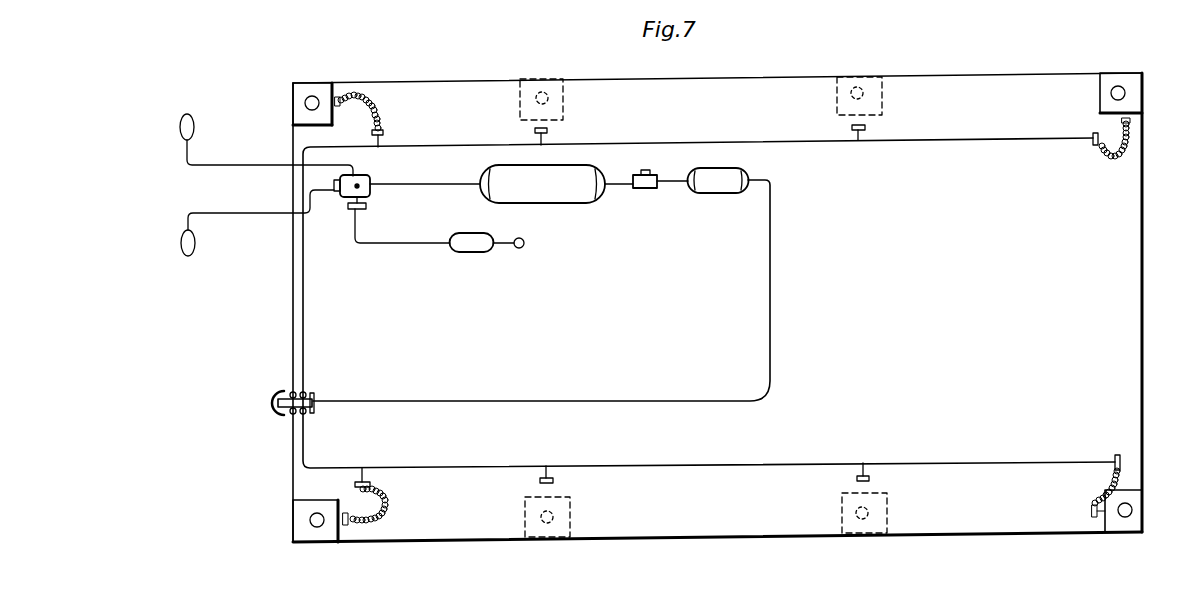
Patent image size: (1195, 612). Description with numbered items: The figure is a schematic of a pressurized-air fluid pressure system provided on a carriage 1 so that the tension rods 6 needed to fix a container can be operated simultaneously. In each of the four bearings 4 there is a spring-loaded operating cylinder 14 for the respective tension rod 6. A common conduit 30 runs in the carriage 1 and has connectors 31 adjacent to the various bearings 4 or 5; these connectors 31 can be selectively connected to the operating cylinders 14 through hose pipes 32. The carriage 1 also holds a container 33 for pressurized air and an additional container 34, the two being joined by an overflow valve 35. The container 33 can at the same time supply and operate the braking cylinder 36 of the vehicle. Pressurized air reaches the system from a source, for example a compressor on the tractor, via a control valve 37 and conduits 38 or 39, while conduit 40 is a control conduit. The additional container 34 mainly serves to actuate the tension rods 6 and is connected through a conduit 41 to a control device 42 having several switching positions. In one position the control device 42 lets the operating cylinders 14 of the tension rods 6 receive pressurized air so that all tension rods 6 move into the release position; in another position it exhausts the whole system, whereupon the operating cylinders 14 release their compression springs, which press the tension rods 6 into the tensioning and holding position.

The carriage 1 is at (1007, 72).
The bearing 4 is at (326, 532).
The bearing 5 is at (530, 88).
The tension rod 6 is at (305, 102).
The operating cylinder 14 is at (313, 90).
The common conduit 30 is at (301, 340).
The connector 31 is at (386, 130).
The hose pipe 32 is at (366, 90).
The container for pressurized air 33 is at (567, 195).
The additional container 34 is at (728, 188).
The overflow valve 35 is at (652, 187).
The braking cylinder 36 is at (475, 246).
The control valve 37 is at (350, 183).
The conduit 38 is at (428, 187).
The conduit 39 is at (215, 167).
The control conduit 40 is at (246, 213).
The conduit 41 is at (772, 293).
The control device 42 is at (268, 403).